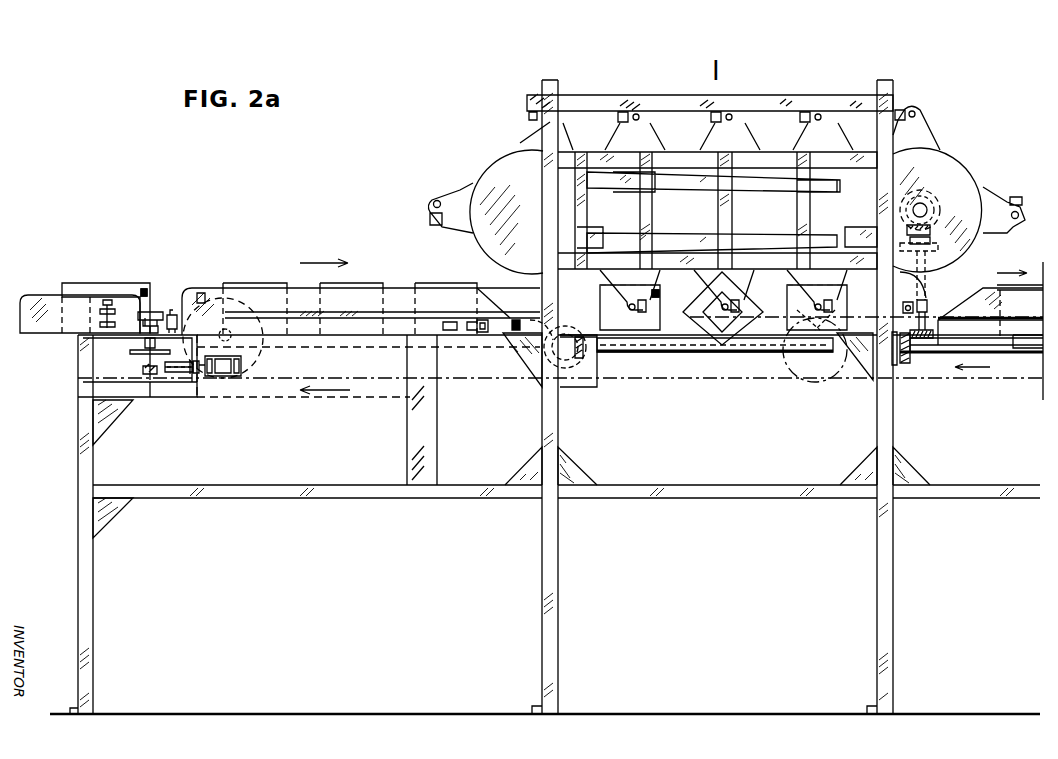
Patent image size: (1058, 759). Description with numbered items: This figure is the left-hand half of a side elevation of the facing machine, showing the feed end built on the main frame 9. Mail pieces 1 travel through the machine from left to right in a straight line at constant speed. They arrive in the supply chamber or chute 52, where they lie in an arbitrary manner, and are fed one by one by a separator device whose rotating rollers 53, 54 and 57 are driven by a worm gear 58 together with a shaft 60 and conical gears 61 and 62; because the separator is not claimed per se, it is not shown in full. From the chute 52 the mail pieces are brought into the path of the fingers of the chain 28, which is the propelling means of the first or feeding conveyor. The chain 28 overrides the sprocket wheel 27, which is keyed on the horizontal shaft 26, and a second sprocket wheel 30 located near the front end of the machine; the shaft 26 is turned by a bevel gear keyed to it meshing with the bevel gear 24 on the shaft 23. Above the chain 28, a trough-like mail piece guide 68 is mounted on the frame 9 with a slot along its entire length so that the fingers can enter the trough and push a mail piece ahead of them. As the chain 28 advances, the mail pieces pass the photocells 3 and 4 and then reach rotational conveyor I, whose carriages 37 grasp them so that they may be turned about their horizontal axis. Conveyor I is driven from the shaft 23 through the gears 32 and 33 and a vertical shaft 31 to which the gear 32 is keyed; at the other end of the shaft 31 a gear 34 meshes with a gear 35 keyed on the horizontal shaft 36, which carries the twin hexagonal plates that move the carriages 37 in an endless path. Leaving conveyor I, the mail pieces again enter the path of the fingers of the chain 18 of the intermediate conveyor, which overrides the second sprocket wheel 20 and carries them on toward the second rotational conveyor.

The mail pieces 1 is at (102, 283).
The photocell 3 is at (450, 340).
The photocell 4 is at (484, 348).
The main frame 9 is at (340, 500).
The chain 18 is at (978, 385).
The second sprocket wheel 20 is at (815, 382).
The shaft 23 is at (648, 354).
The bevel gear 24 is at (590, 362).
The horizontal shaft 26 is at (545, 402).
The sprocket wheel 27 is at (595, 392).
The chain 28 is at (392, 382).
The second sprocket wheel 30 is at (266, 358).
The vertical shaft 31 is at (928, 298).
The gear 32 is at (930, 360).
The gear 33 is at (910, 365).
The gear 34 is at (970, 256).
The gear 35 is at (930, 195).
The horizontal shaft 36 is at (923, 208).
The carriages 37 is at (452, 198).
The supply chamber or chute 52 is at (45, 296).
The rotating roller 53 is at (100, 312).
The rotating roller 54 is at (155, 312).
The rotating roller 57 is at (172, 315).
The worm gear 58 is at (225, 378).
The shaft 60 is at (200, 388).
The conical gear 61 is at (143, 378).
The conical gear 62 is at (168, 385).
The trough-like mail piece guide 68 is at (205, 297).